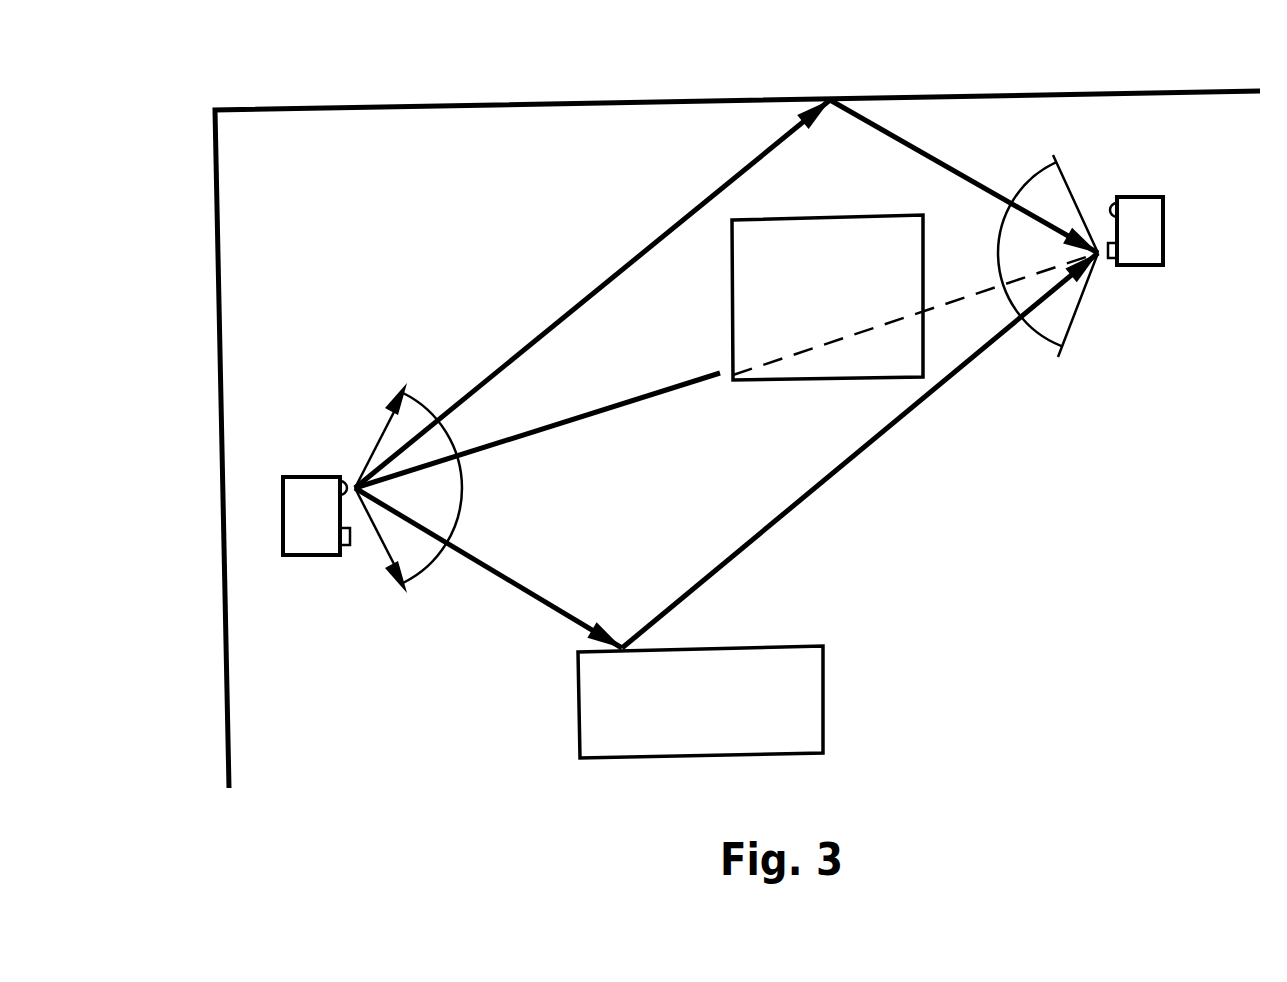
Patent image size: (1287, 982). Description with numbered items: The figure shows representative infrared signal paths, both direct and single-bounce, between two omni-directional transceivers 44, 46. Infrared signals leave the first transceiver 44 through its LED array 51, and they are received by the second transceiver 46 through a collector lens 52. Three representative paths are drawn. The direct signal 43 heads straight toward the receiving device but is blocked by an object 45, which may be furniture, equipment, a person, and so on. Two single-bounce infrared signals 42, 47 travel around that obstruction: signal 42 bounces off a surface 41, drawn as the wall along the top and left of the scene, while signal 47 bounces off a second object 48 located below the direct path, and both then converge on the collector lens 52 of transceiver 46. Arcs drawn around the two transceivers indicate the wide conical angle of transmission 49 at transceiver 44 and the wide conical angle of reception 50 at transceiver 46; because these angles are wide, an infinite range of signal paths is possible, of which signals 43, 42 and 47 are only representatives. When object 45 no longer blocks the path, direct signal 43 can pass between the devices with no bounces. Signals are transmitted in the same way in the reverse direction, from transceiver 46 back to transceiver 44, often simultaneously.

The surface 41 is at (727, 100).
The single-bounce infrared signal 42 is at (610, 280).
The direct signal 43 is at (655, 392).
The omni-directional transceiver 44 is at (305, 555).
The object 45 is at (782, 220).
The omni-directional transceiver 46 is at (1145, 197).
The single-bounce infrared signal 47 is at (840, 470).
The object 48 is at (825, 693).
The conical angle of transmission 49 is at (427, 565).
The conical angle of reception 50 is at (1032, 173).
The LED array 51 is at (348, 480).
The collector lens 52 is at (1110, 262).